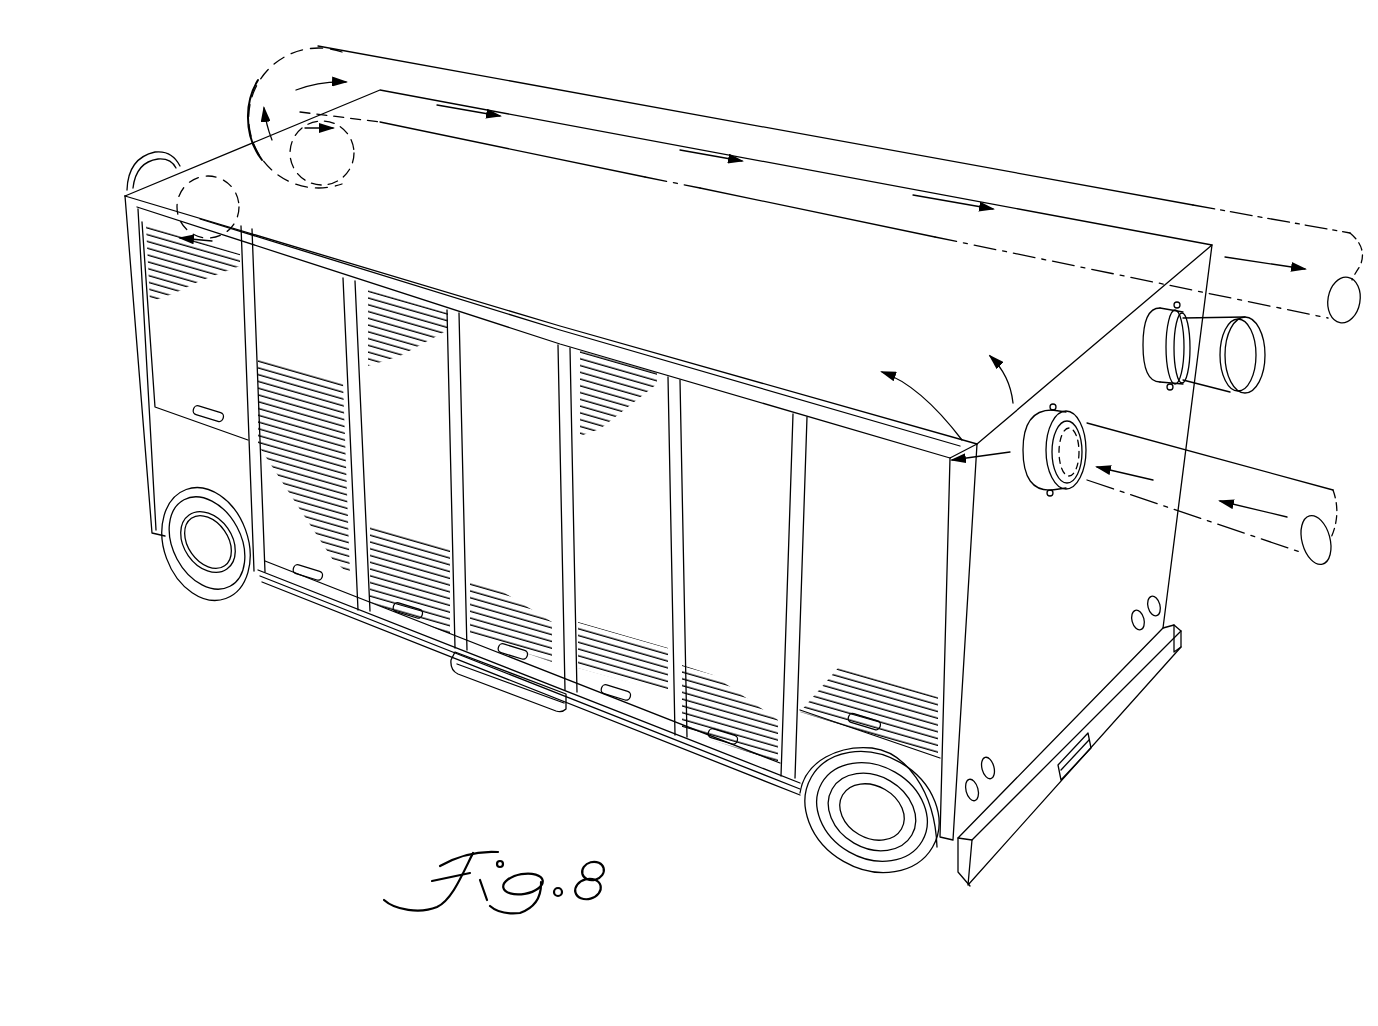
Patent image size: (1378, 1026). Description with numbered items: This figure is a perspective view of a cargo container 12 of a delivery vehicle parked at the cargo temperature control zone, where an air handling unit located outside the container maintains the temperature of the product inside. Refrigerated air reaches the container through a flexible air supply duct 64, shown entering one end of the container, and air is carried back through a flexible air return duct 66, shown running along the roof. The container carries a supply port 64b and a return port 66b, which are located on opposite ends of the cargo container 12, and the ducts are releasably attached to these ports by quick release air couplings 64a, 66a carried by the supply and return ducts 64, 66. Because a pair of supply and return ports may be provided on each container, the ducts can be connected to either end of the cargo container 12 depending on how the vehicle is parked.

The cargo container 12 is at (645, 272).
The flexible air return duct 66 is at (883, 130).
The quick release air coupling 66a is at (290, 188).
The return port 66b is at (345, 172).
The flexible air supply duct 64 is at (1268, 468).
The quick release air coupling 64a is at (1063, 407).
The supply port 64b is at (1030, 487).